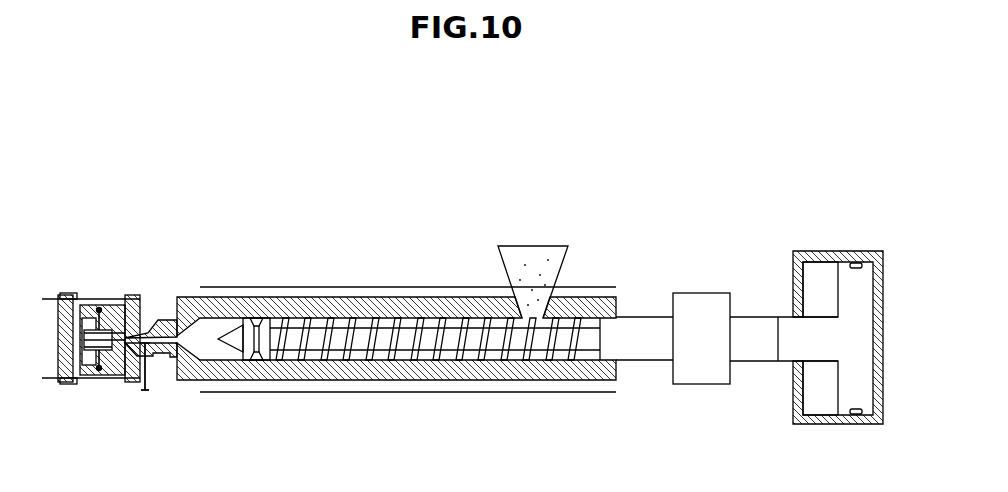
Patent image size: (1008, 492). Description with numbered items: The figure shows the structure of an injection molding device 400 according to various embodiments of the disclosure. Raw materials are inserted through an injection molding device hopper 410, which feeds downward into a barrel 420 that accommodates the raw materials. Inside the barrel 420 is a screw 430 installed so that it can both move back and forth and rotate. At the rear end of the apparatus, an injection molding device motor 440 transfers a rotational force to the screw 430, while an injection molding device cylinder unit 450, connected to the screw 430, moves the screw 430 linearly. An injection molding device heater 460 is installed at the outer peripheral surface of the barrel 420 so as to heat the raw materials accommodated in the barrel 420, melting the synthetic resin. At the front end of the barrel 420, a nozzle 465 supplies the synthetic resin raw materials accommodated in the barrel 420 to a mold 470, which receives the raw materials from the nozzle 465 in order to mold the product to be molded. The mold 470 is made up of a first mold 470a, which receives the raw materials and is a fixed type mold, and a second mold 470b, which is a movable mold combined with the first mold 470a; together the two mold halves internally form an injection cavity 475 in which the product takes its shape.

The injection molding device 400 is at (131, 183).
The injection molding device hopper 410 is at (540, 239).
The barrel 420 is at (382, 295).
The screw 430 is at (292, 364).
The injection molding device motor 440 is at (704, 284).
The injection molding device cylinder unit 450 is at (844, 276).
The injection molding device heater 460 is at (257, 282).
The nozzle 465 is at (148, 369).
The mold 470 is at (158, 249).
The first mold 470a is at (121, 298).
The second mold 470b is at (90, 298).
The injection cavity 475 is at (118, 373).